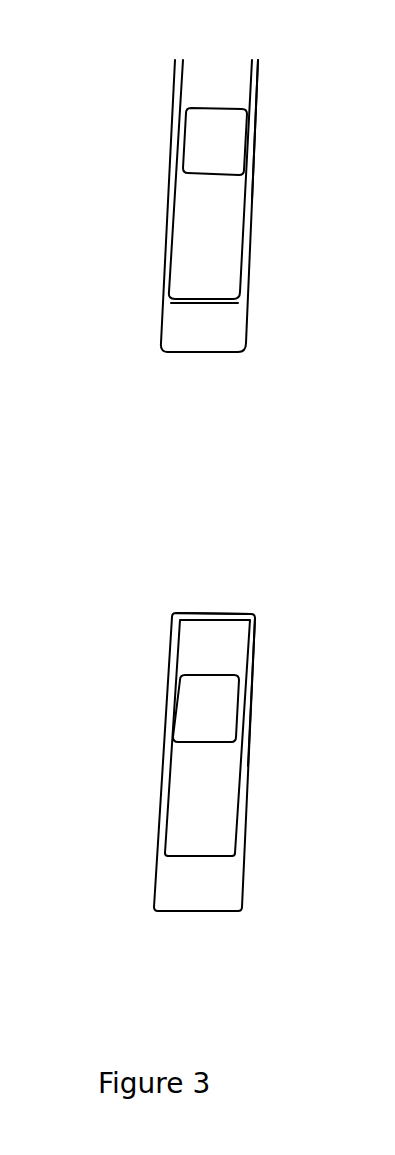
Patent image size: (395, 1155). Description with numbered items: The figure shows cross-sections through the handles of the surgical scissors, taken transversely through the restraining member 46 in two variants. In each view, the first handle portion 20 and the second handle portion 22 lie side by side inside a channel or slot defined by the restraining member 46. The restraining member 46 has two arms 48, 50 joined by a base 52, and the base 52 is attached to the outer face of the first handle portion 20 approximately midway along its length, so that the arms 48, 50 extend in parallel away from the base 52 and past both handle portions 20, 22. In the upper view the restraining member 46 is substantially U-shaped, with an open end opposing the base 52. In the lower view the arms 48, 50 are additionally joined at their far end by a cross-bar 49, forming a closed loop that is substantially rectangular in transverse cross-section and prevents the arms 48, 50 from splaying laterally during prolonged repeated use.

The first handle portion 20 is at (223, 333).
The second handle portion 22 is at (230, 129).
The restraining member 46 is at (132, 248).
The arm 48 is at (210, 67).
The cross-bar 49 is at (207, 613).
The arm 50 is at (172, 200).
The base 52 is at (175, 352).